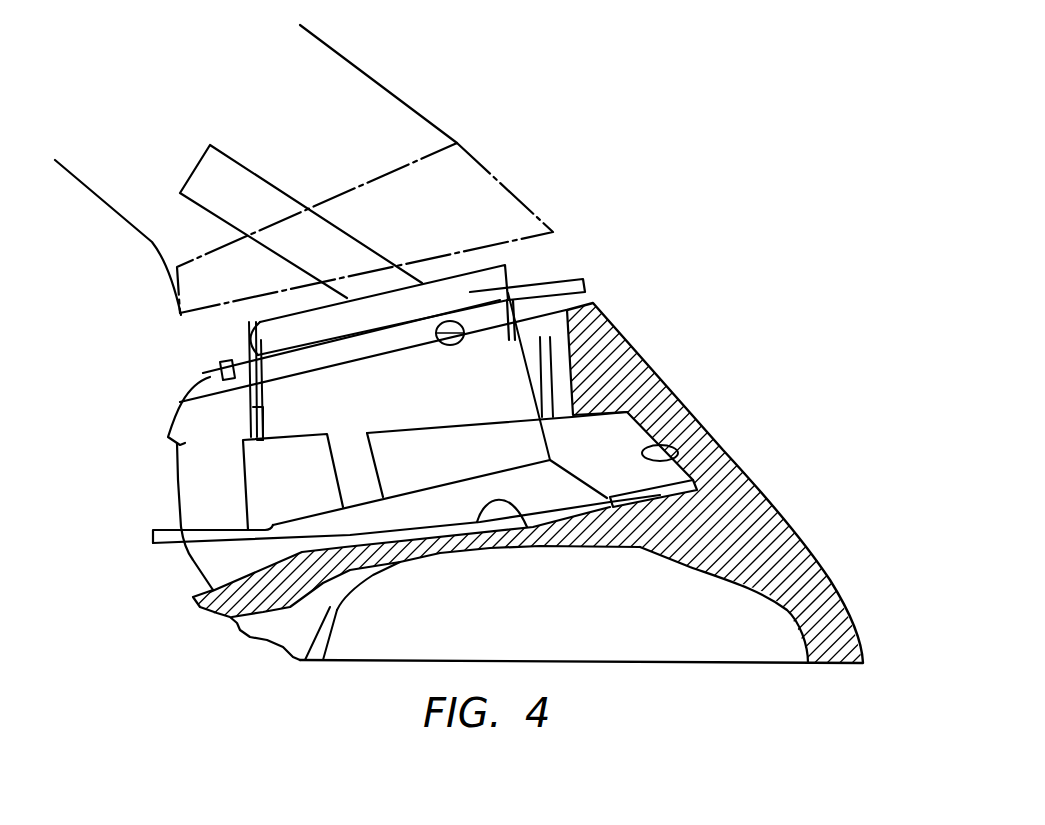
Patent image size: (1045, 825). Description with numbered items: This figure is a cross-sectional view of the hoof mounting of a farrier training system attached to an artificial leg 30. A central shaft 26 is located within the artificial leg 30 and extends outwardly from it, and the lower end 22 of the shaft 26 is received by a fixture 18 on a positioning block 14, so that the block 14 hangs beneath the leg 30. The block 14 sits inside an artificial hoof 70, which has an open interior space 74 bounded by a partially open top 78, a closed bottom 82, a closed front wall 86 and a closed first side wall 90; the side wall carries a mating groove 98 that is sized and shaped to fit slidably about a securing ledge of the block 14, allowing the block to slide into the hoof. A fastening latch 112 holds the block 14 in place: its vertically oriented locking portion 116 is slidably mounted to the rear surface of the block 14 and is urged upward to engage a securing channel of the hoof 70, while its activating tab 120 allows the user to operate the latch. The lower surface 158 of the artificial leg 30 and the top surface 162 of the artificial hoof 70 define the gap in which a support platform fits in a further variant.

The positioning block 14 is at (540, 302).
The fixture 18 is at (560, 333).
The lower end 22 is at (583, 280).
The central shaft 26 is at (343, 223).
The artificial leg 30 is at (318, 82).
The artificial hoof 70 is at (696, 366).
The open interior space 74 is at (205, 565).
The partially open top 78 is at (385, 363).
The closed bottom 82 is at (527, 527).
The closed front wall 86 is at (673, 457).
The first side wall 90 is at (580, 433).
The mating groove 98 is at (177, 480).
The fastening latch 112 is at (257, 433).
The locking portion 116 is at (253, 420).
The activating tab 120 is at (153, 537).
The lower surface 158 is at (530, 237).
The top surface 162 is at (210, 378).